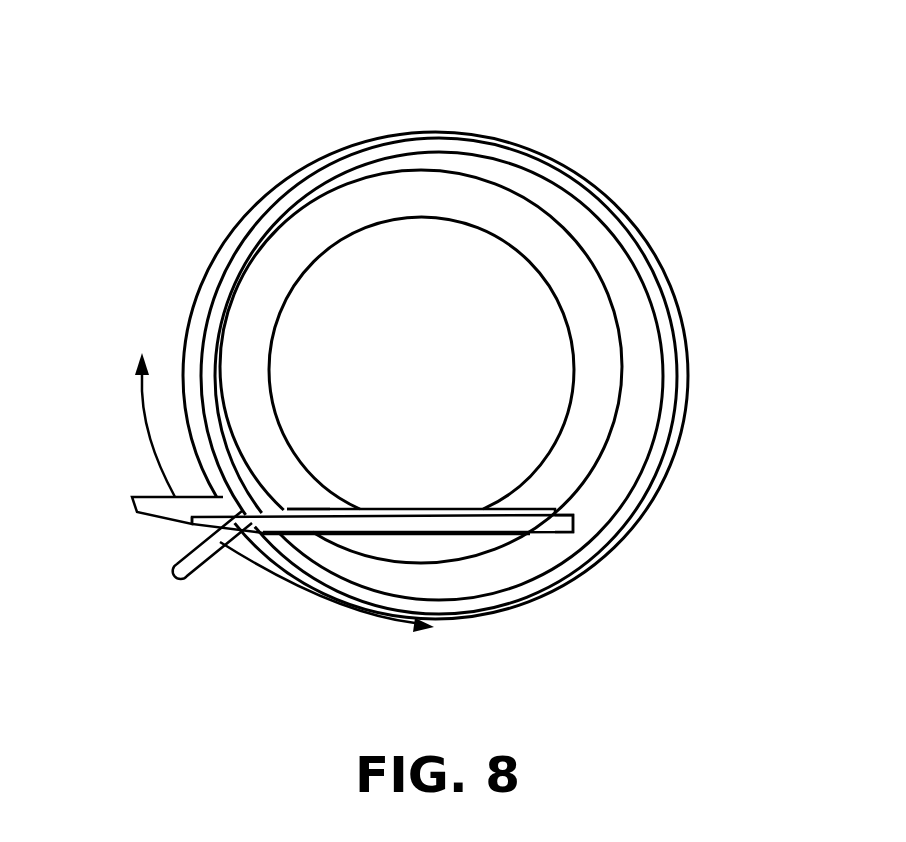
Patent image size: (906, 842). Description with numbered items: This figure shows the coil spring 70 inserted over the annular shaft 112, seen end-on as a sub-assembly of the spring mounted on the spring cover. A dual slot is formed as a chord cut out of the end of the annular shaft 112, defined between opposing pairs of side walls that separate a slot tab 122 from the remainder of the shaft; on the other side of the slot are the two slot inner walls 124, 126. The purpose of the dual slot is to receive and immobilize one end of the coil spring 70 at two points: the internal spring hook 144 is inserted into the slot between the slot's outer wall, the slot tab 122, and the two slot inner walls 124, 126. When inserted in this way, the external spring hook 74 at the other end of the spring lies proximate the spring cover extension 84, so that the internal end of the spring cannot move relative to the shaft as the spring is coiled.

The coil spring 70 is at (575, 182).
The annular shaft 112 is at (362, 208).
The slot inner wall 126 is at (315, 507).
The slot inner wall 124 is at (520, 510).
The internal spring hook 144 is at (562, 525).
The slot tab 122 is at (457, 537).
The spring cover extension 84 is at (167, 505).
The external spring hook 74 is at (203, 548).